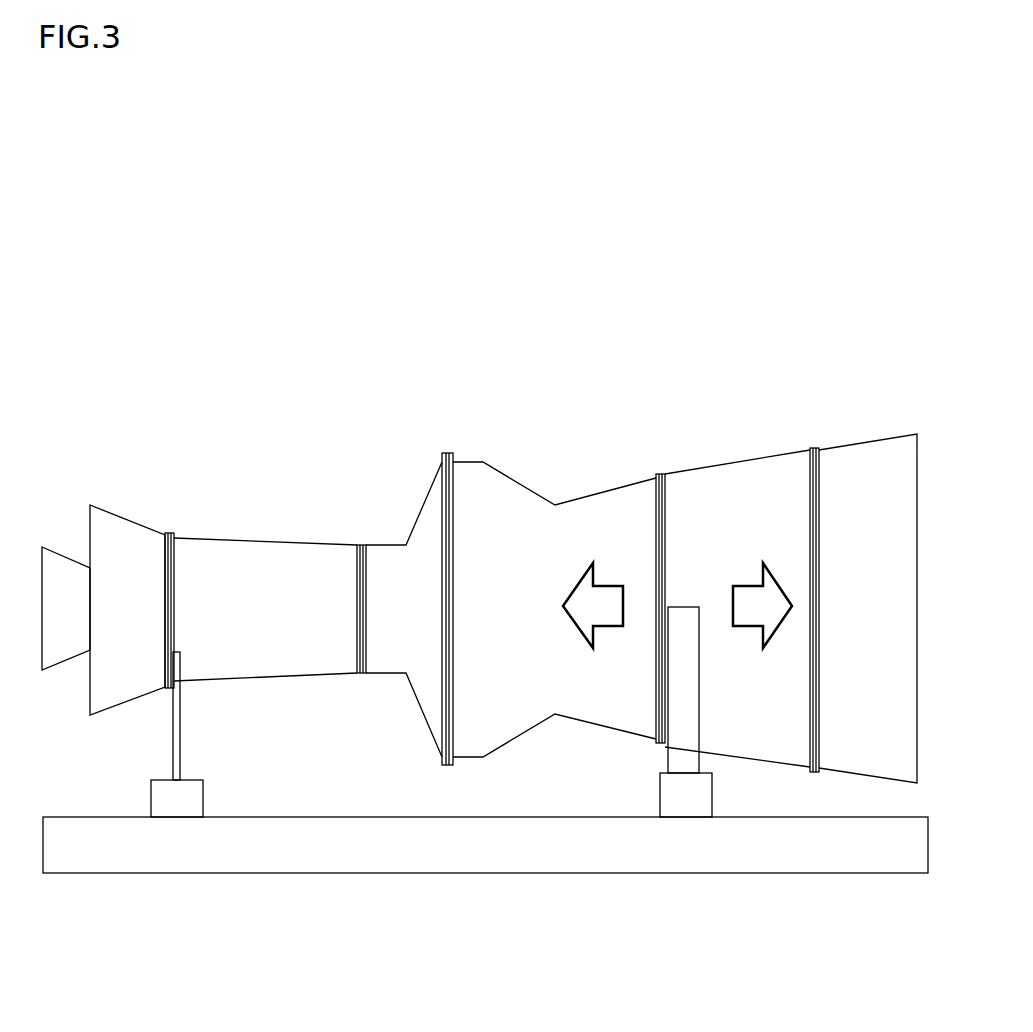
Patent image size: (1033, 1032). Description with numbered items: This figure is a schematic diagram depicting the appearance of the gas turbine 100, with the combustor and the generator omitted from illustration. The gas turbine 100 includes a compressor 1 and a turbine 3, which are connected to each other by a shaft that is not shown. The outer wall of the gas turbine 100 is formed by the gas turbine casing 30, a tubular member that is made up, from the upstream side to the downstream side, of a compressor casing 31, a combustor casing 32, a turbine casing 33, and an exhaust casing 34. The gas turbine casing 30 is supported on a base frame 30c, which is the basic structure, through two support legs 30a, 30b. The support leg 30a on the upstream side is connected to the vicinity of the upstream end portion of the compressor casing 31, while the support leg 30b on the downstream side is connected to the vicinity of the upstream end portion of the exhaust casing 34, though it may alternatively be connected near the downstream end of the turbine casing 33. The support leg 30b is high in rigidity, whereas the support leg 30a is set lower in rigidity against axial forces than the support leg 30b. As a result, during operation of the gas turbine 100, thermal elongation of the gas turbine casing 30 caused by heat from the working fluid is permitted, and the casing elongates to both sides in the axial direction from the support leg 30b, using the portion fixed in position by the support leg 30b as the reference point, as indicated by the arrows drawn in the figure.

The gas turbine 100 is at (416, 392).
The compressor 1 is at (266, 521).
The turbine 3 is at (565, 461).
The gas turbine casing 30 is at (463, 460).
The support leg 30a is at (173, 742).
The support leg 30b is at (668, 758).
The base frame 30c is at (358, 817).
The compressor casing 31 is at (268, 678).
The combustor casing 32 is at (398, 678).
The turbine casing 33 is at (576, 721).
The exhaust casing 34 is at (753, 757).